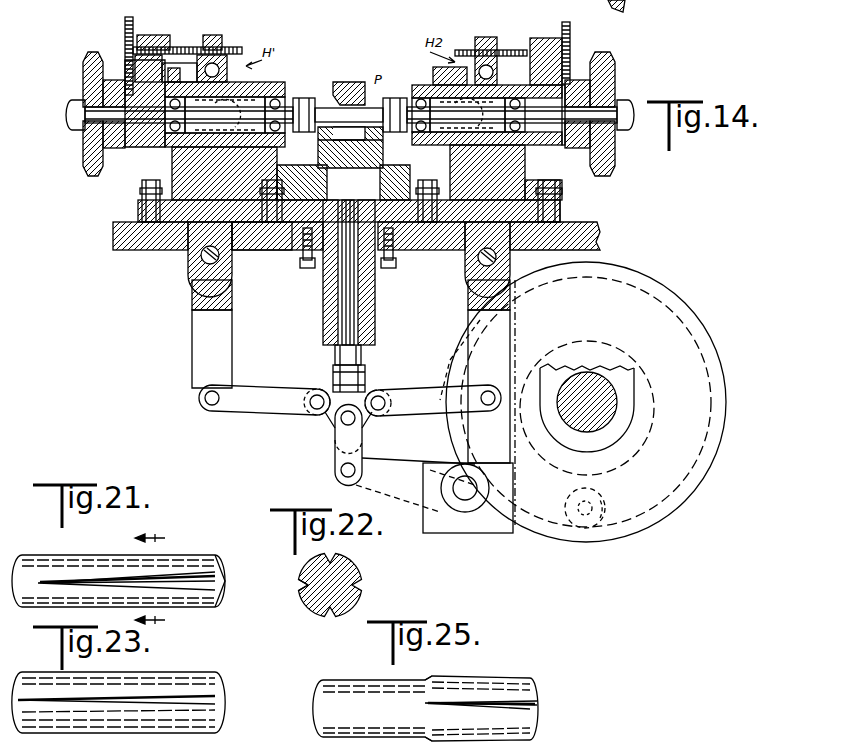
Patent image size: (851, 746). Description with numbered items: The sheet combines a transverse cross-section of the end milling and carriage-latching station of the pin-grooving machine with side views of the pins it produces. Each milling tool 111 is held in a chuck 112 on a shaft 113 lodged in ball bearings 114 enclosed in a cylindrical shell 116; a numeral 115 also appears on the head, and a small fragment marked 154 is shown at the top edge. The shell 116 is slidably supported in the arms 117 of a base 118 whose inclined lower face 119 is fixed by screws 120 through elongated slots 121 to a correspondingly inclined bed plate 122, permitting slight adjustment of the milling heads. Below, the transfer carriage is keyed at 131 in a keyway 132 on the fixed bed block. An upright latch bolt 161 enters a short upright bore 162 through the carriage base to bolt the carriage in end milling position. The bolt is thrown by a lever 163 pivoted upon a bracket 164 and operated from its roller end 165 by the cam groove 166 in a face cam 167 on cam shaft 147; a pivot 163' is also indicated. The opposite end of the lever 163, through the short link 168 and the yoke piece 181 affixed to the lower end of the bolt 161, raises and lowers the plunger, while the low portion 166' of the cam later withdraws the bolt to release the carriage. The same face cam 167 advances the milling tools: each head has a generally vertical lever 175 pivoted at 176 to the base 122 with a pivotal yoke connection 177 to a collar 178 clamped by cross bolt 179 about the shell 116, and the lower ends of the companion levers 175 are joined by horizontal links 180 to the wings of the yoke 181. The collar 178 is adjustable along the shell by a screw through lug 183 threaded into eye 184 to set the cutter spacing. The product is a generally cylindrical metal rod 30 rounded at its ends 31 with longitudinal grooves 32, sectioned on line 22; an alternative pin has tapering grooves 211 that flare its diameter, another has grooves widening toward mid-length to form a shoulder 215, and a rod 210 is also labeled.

In FIG. 14, the milling tool 111 is at (322, 108).
In FIG. 14, the chuck 112 is at (304, 132).
In FIG. 14, the shaft 113 is at (285, 90).
In FIG. 14, the ball bearings 114 is at (395, 98).
In FIG. 14, the housing body 115 is at (148, 147).
In FIG. 14, the cylindrical shell 116 is at (190, 62).
In FIG. 14, the arms 117 is at (157, 50).
In FIG. 14, the base 118 is at (140, 190).
In FIG. 14, the inclined lower face 119 is at (175, 222).
In FIG. 14, the screws 120 is at (302, 256).
In FIG. 14, the elongated slots 121 is at (262, 250).
In FIG. 14, the bed plate 122 is at (150, 240).
In FIG. 14, the key 131 is at (290, 175).
In FIG. 14, the keyway 132 is at (410, 175).
In FIG. 14, the cam shaft 147 is at (594, 380).
In FIG. 14, the part 154 is at (626, 7).
In FIG. 14, the latch bolt 161 is at (323, 285).
In FIG. 14, the upright bore 162 is at (172, 35).
In FIG. 14, the lever 163 is at (405, 485).
In FIG. 14, the pivot 163' is at (478, 511).
In FIG. 14, the bracket 164 is at (452, 533).
In FIG. 14, the roller end 165 is at (620, 535).
In FIG. 14, the cam groove 166 is at (615, 402).
In FIG. 14, the low portion of the cam 166' is at (629, 422).
In FIG. 14, the face cam 167 is at (690, 312).
In FIG. 14, the link 168 is at (335, 452).
In FIG. 14, the vertical lever 175 is at (192, 316).
In FIG. 14, the pivot 176 is at (190, 270).
In FIG. 14, the pivotal yoke connection 177 is at (172, 165).
In FIG. 14, the collar 178 is at (228, 60).
In FIG. 14, the cross bolt 179 is at (236, 47).
In FIG. 14, the horizontal links 180 is at (257, 413).
In FIG. 14, the yoke piece 181 is at (366, 385).
In FIG. 14, the lug 183 is at (124, 50).
In FIG. 14, the eye 184 is at (215, 35).
In FIG. 21, the metal rod 30 is at (200, 556).
In FIG. 22, the metal rod 30 is at (362, 582).
In FIG. 21, the rounded ends 31 is at (226, 578).
In FIG. 21, the grooves 32 is at (100, 580).
In FIG. 22, the grooves 32 is at (305, 586).
In FIG. 21, the section line 22 is at (161, 580).
In FIG. 23, the grooves 211 is at (187, 690).
In FIG. 25, the shoulder 215 is at (430, 685).
In FIG. 25, the groove 210 is at (490, 700).